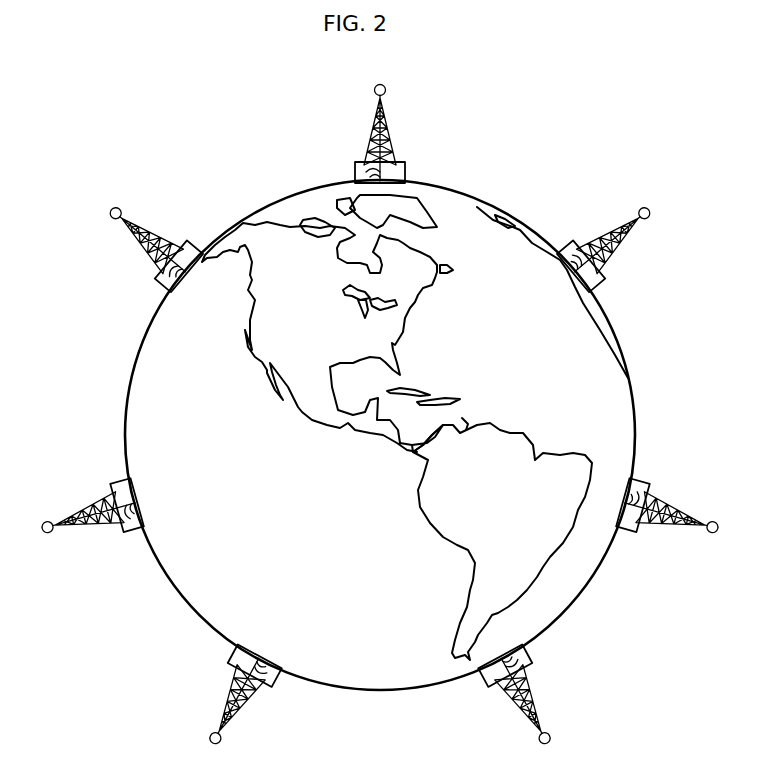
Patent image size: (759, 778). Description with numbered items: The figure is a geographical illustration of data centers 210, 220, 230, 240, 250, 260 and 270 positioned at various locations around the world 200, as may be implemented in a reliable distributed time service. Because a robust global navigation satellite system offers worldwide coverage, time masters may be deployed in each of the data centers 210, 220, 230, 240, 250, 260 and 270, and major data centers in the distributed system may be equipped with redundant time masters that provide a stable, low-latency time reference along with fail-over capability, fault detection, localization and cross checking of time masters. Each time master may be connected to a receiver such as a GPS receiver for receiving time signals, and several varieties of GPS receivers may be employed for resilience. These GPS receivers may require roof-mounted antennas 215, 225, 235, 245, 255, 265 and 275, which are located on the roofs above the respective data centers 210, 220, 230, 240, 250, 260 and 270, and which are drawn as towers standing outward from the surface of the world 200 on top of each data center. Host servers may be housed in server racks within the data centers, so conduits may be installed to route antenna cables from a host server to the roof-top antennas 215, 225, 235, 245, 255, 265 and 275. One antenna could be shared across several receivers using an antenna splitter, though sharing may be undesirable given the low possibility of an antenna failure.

The world 200 is at (492, 199).
The data center 210 is at (644, 488).
The roof-mounted antenna 215 is at (668, 524).
The data center 220 is at (485, 686).
The roof-mounted antenna 225 is at (534, 690).
The data center 230 is at (270, 686).
The roof-mounted antenna 235 is at (226, 690).
The data center 240 is at (121, 487).
The roof-mounted antenna 245 is at (96, 524).
The data center 250 is at (158, 272).
The roof-mounted antenna 255 is at (150, 226).
The data center 260 is at (406, 172).
The roof-mounted antenna 265 is at (372, 134).
The data center 270 is at (604, 278).
The roof-mounted antenna 275 is at (601, 232).